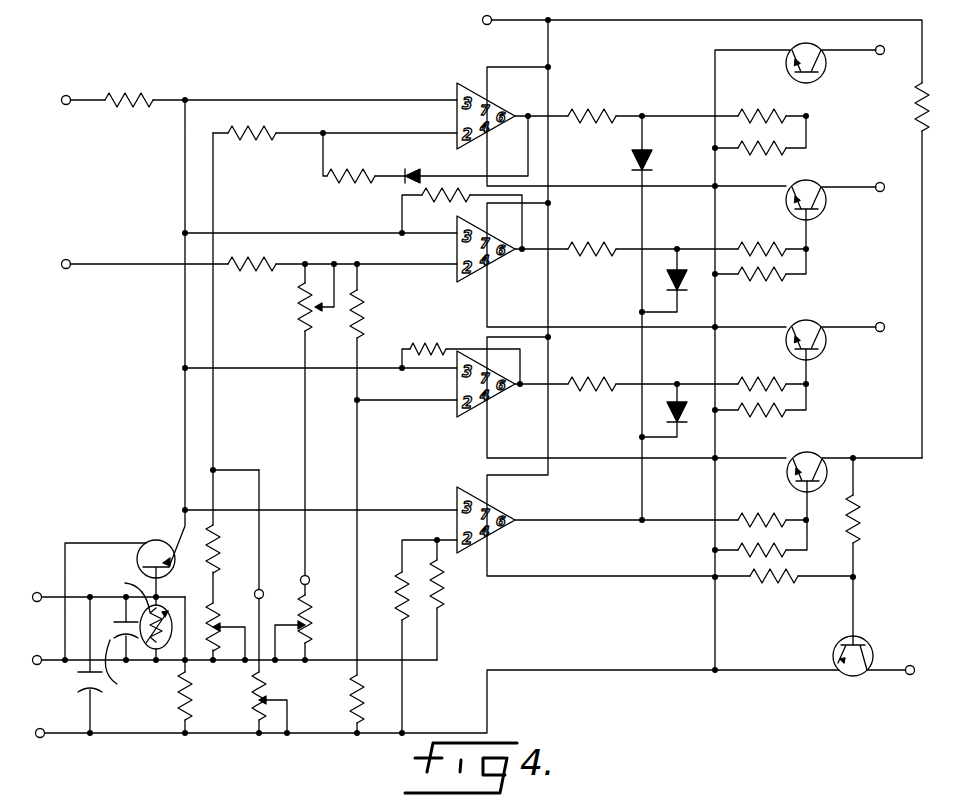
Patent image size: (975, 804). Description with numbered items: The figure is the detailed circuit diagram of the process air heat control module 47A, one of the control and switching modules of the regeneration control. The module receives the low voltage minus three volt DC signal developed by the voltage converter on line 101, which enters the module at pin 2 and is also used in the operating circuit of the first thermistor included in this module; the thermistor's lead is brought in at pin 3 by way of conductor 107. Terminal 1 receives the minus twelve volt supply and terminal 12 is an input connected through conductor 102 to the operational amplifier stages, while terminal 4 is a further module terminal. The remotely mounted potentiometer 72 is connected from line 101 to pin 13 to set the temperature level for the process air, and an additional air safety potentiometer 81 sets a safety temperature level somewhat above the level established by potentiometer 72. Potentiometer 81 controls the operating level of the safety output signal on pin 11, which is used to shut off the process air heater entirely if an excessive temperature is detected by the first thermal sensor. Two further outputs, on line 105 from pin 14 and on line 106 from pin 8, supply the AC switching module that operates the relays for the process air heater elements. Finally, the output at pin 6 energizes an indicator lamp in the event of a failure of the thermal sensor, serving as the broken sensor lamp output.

The process air heat control module 47A is at (352, 62).
The input terminal 12 is at (54, 264).
The input conductor 102 is at (150, 272).
The thermistor terminal 3 is at (28, 598).
The conductor 107 is at (47, 596).
The -3V terminal 2 is at (28, 661).
The line 101 is at (47, 660).
The -12V terminal 1 is at (32, 734).
The terminal 4 is at (267, 565).
The pin 13 is at (319, 463).
The potentiometer 72 is at (307, 644).
The air safety potentiometer 81 is at (253, 719).
The pin 11 is at (866, 51).
The output terminal 14 is at (893, 193).
The line 105 is at (856, 189).
The output terminal 8 is at (891, 330).
The line 106 is at (845, 326).
The pin 6 is at (897, 677).